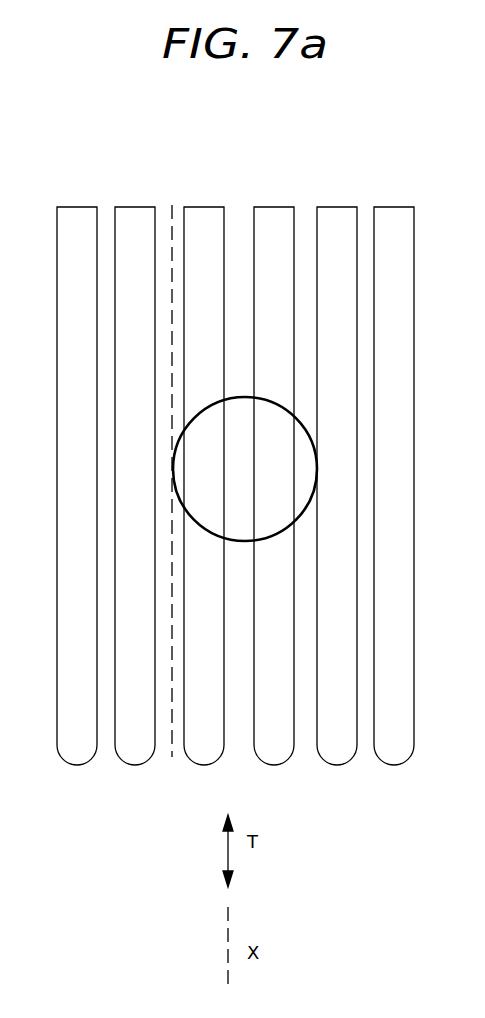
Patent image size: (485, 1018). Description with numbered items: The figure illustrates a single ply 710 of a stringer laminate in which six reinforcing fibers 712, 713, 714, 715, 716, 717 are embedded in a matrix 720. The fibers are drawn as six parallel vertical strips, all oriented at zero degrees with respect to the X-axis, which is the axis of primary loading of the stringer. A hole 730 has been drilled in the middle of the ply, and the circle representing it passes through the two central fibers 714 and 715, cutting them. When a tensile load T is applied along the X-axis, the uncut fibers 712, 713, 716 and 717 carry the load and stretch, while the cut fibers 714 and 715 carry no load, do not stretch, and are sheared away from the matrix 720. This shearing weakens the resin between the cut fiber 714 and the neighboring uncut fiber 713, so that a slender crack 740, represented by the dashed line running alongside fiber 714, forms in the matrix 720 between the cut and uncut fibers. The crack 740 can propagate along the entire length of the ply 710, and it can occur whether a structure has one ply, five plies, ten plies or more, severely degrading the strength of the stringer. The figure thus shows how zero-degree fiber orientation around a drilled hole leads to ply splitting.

The ply 710 is at (165, 830).
The fiber 712 is at (86, 207).
The fiber 713 is at (137, 207).
The fiber 714 is at (208, 207).
The fiber 715 is at (268, 207).
The fiber 716 is at (330, 207).
The fiber 717 is at (398, 207).
The matrix 720 is at (311, 762).
The hole 730 is at (228, 479).
The crack 740 is at (170, 743).